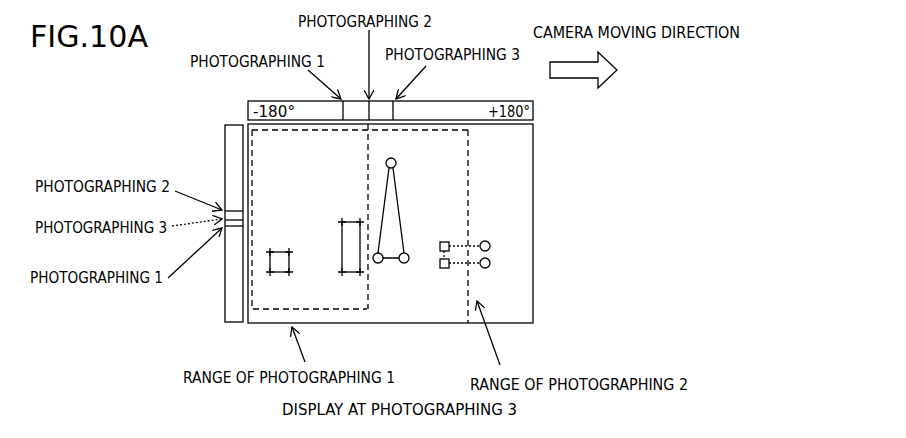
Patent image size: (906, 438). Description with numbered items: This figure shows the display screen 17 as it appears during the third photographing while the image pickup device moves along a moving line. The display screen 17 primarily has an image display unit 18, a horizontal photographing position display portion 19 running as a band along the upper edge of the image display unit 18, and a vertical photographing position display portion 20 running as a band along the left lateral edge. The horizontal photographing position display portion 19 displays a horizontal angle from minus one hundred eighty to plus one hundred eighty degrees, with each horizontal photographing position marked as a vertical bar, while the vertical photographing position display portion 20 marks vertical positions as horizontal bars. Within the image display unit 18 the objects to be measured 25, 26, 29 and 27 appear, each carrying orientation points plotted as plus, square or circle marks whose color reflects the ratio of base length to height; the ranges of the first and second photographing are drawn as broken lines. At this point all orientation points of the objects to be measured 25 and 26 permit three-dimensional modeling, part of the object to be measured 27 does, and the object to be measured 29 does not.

The display screen 17 is at (537, 259).
The image display unit 18 is at (511, 218).
The horizontal photographing position display portion 19 is at (458, 101).
The vertical photographing position display portion 20 is at (226, 280).
The object to be measured 25 is at (280, 251).
The object to be measured 26 is at (345, 221).
The object to be measured 27 is at (440, 259).
The object to be measured 29 is at (397, 188).